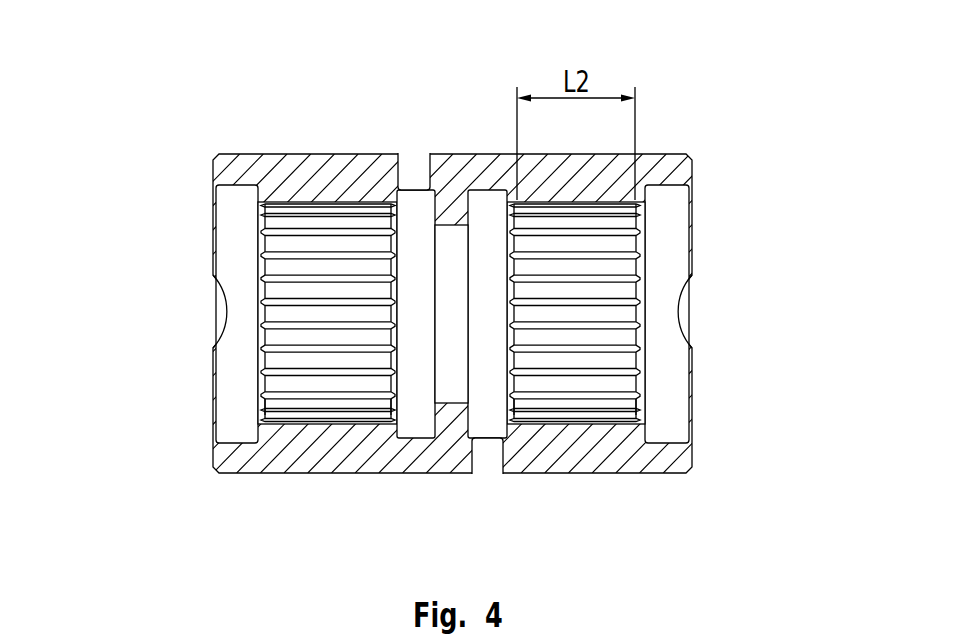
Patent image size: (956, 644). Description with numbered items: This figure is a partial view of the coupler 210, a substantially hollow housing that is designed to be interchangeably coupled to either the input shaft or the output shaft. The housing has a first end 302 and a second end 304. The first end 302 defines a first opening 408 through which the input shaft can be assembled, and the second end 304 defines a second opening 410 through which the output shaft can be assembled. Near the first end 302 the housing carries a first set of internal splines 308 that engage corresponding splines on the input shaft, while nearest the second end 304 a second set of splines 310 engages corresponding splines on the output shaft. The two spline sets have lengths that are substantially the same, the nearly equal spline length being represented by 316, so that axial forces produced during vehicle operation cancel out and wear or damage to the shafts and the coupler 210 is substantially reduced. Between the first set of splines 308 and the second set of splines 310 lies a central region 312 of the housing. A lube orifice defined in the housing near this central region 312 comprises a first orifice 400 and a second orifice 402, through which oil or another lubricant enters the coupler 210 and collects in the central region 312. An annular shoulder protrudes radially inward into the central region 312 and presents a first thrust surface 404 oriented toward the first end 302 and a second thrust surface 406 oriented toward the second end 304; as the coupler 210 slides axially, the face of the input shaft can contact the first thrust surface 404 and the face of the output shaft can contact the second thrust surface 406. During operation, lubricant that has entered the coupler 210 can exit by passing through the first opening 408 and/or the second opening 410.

The coupler 210 is at (187, 145).
The first end 302 is at (180, 238).
The second end 304 is at (730, 262).
The first set of internal splines 308 is at (313, 222).
The second set of splines 310 is at (600, 260).
The central region 312 is at (452, 425).
The equal spline length 316 is at (277, 200).
The first orifice 400 is at (417, 165).
The second orifice 402 is at (493, 472).
The first thrust surface 404 is at (432, 208).
The second thrust surface 406 is at (472, 217).
The first opening 408 is at (193, 338).
The second opening 410 is at (712, 340).